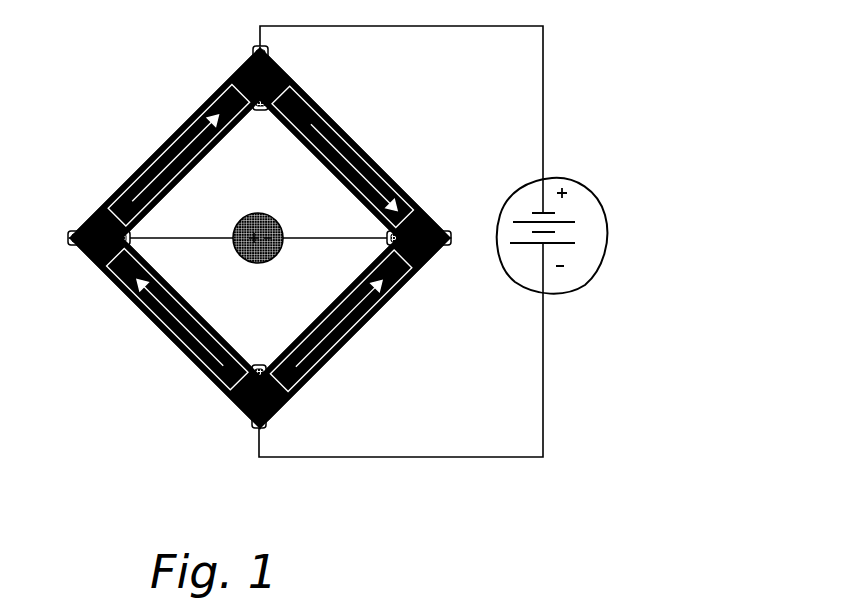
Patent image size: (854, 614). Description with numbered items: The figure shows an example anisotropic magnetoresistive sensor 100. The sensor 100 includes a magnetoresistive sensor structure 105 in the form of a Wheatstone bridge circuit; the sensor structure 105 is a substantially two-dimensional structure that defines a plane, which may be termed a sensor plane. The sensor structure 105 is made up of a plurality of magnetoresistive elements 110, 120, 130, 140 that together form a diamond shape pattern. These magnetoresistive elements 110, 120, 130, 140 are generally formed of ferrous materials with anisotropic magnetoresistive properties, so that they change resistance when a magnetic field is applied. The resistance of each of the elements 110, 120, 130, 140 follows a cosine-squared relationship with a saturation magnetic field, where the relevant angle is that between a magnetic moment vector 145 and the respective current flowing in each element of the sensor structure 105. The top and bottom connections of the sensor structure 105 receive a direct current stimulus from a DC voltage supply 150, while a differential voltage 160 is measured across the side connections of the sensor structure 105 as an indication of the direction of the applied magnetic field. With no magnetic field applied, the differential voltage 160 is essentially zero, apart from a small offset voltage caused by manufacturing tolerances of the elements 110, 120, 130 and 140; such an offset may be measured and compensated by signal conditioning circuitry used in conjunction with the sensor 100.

The AMR sensor 100 is at (636, 44).
The magnetoresistive sensor structure 105 is at (172, 78).
The magnetoresistive element 110 is at (112, 172).
The magnetoresistive element 120 is at (150, 332).
The magnetoresistive element 130 is at (420, 188).
The magnetoresistive element 140 is at (388, 310).
The magnetic moment vector 145 is at (168, 115).
The DC voltage supply 150 is at (613, 208).
The differential voltage 160 is at (254, 205).